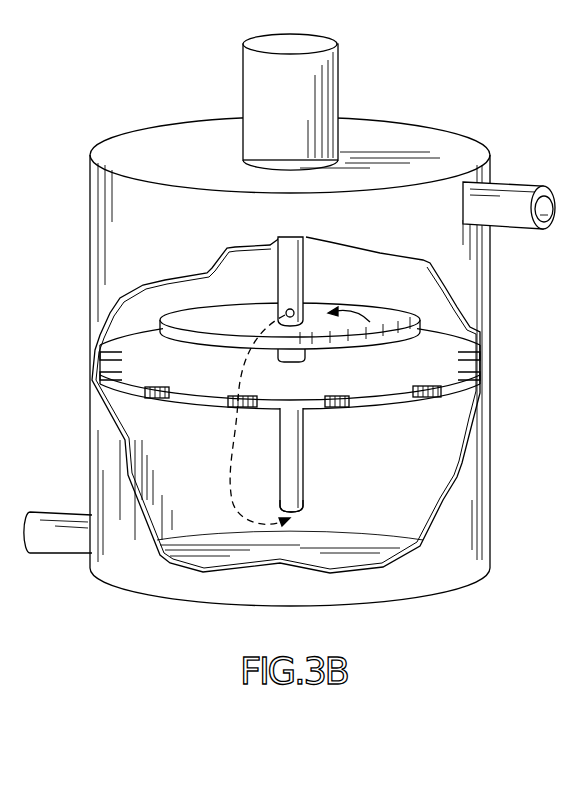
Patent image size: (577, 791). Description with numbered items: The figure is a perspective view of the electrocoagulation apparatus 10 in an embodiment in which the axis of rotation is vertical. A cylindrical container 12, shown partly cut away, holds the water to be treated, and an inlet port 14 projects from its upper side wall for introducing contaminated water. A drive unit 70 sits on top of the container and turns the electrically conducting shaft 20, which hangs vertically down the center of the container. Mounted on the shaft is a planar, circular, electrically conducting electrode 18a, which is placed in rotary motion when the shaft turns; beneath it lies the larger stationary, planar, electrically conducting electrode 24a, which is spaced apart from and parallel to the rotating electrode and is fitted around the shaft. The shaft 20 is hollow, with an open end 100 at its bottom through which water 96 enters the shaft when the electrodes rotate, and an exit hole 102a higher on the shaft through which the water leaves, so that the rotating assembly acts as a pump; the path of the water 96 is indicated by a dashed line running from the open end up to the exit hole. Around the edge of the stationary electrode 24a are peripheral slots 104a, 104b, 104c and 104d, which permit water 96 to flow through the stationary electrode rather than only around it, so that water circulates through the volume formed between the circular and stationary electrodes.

The electrocoagulation apparatus 10 is at (203, 83).
The container 12 is at (90, 272).
The inlet port 14 is at (520, 197).
The circular electrode 18a is at (217, 322).
The shaft 20 is at (310, 263).
The stationary electrode 24a is at (148, 360).
The motor 70 is at (293, 104).
The water 96 is at (236, 473).
The open end 100 is at (300, 519).
The exit hole 102a is at (286, 313).
The peripheral slot 104a is at (158, 398).
The peripheral slot 104b is at (230, 407).
The peripheral slot 104c is at (340, 407).
The peripheral slot 104d is at (435, 397).